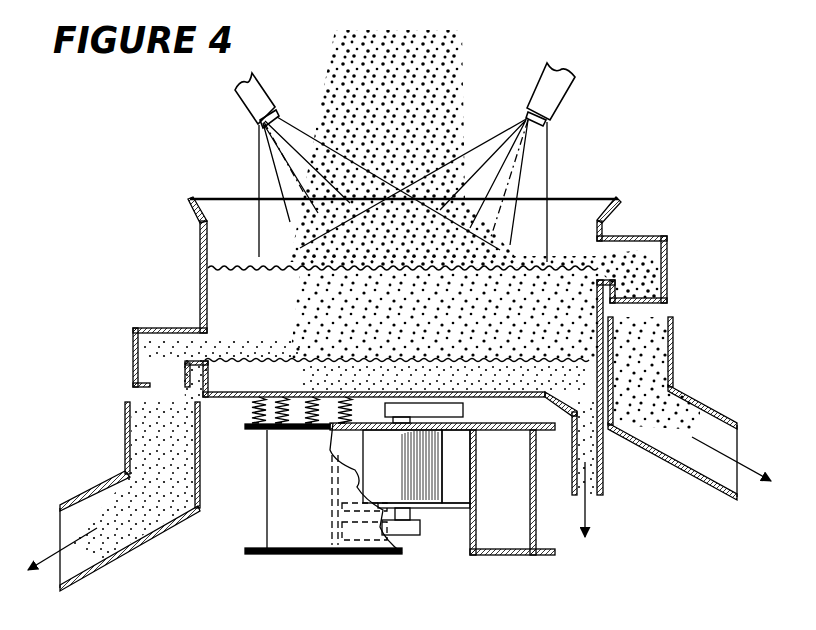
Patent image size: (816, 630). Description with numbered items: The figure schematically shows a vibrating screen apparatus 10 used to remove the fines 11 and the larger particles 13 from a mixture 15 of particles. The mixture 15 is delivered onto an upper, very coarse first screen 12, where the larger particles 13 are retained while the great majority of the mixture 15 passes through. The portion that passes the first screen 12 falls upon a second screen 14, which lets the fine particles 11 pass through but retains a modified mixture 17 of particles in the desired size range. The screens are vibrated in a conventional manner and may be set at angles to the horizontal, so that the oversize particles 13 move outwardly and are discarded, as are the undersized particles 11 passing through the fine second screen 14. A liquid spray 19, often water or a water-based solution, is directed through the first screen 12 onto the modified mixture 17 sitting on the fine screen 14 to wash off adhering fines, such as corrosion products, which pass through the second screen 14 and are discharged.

The vibrating screen apparatus 10 is at (657, 211).
The fines 11 is at (583, 394).
The first screen 12 is at (550, 262).
The larger particles 13 is at (661, 423).
The second screen 14 is at (508, 350).
The mixture 15 is at (463, 82).
The modified mixture 17 is at (137, 497).
The liquid spray 19 is at (255, 150).